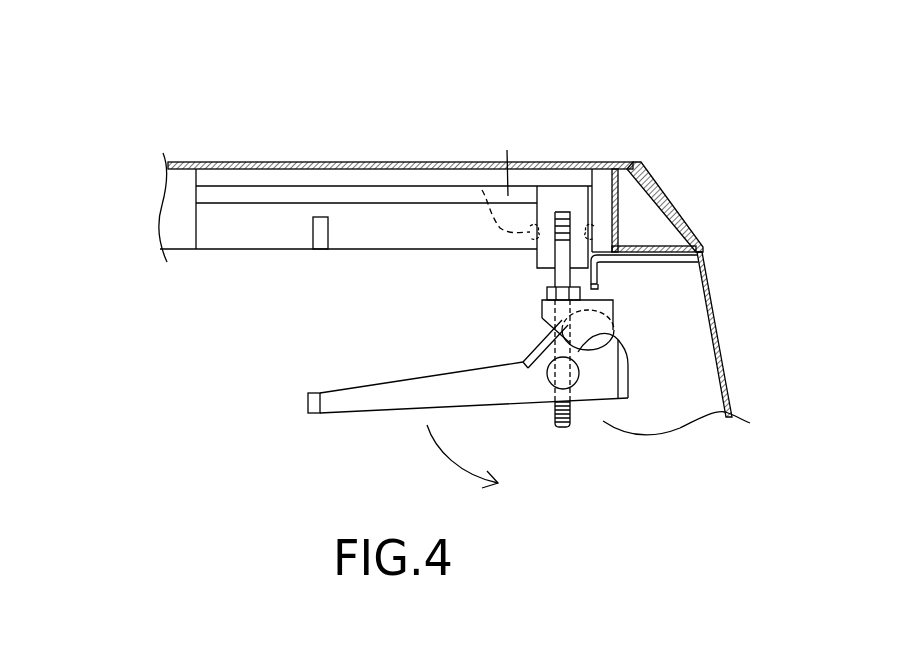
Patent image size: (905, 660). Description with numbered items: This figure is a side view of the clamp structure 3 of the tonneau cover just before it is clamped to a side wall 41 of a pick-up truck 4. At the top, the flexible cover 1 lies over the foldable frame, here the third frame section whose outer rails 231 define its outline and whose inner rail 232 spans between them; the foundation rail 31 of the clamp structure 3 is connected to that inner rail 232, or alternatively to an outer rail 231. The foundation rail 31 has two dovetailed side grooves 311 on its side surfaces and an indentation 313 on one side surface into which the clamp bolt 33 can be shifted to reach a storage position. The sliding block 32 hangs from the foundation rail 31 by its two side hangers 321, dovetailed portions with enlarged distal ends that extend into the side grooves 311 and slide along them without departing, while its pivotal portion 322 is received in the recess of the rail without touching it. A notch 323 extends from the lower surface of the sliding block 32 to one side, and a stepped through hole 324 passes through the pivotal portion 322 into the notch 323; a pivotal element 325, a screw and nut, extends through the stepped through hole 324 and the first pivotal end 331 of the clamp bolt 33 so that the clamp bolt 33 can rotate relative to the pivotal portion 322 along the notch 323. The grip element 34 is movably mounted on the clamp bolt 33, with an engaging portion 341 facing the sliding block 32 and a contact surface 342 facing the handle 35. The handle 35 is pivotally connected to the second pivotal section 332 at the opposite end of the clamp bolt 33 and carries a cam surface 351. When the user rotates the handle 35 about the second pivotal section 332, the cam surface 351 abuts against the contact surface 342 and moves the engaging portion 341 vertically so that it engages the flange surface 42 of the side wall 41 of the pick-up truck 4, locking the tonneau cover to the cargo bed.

The flexible cover 1 is at (350, 163).
The clamp structure 3 is at (320, 323).
The pick-up truck 4 is at (728, 303).
The foundation rail 31 is at (210, 230).
The side grooves 311 is at (280, 195).
The indentation 313 is at (327, 218).
The sliding block 32 is at (537, 258).
The clamp bolt 33 is at (553, 278).
The grip element 34 is at (523, 360).
The engaging portion 341 is at (600, 285).
The contact surface 342 is at (605, 320).
The handle 35 is at (308, 405).
The cam surface 351 is at (630, 347).
The second pivotal section 332 is at (577, 412).
The side wall 41 is at (722, 358).
The flange surface 42 is at (692, 287).
The outer rails 231 is at (641, 164).
The inner rail 232 is at (182, 178).
The side hangers 321 is at (517, 213).
The pivotal portion 322 is at (617, 158).
The notch 323 is at (580, 190).
The stepped through hole 324 is at (507, 150).
The pivotal element 325 is at (482, 190).
The first pivotal end 331 is at (617, 230).